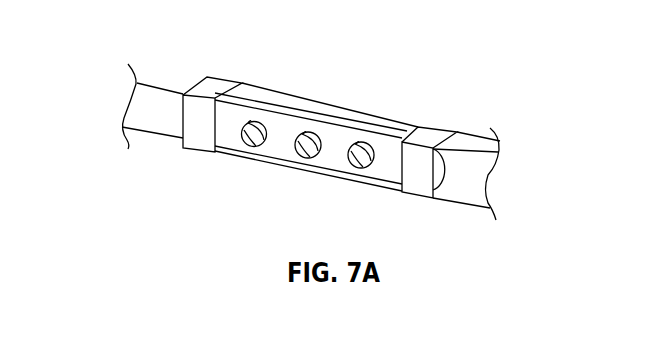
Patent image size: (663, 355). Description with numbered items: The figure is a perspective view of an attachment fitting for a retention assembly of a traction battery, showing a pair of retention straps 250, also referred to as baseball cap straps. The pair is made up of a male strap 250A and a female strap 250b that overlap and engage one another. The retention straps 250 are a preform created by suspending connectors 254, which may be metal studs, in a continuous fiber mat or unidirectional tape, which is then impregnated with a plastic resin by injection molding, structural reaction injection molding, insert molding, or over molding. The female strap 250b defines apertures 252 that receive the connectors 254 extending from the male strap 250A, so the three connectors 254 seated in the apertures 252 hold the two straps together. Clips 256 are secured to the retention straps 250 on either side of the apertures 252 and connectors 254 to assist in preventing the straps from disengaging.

The pair of retention straps 250 is at (103, 106).
The female strap 250b is at (165, 127).
The male strap 250A is at (475, 158).
The clips 256 is at (215, 87).
The apertures 252 is at (259, 122).
The connectors 254 is at (247, 147).